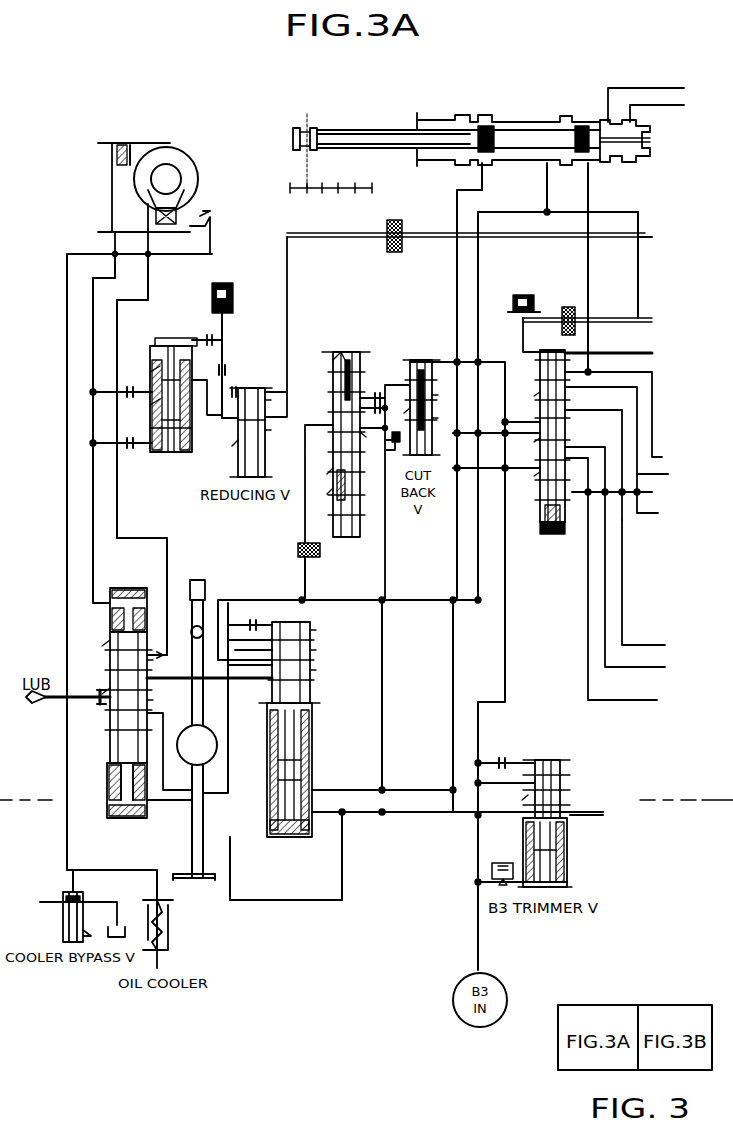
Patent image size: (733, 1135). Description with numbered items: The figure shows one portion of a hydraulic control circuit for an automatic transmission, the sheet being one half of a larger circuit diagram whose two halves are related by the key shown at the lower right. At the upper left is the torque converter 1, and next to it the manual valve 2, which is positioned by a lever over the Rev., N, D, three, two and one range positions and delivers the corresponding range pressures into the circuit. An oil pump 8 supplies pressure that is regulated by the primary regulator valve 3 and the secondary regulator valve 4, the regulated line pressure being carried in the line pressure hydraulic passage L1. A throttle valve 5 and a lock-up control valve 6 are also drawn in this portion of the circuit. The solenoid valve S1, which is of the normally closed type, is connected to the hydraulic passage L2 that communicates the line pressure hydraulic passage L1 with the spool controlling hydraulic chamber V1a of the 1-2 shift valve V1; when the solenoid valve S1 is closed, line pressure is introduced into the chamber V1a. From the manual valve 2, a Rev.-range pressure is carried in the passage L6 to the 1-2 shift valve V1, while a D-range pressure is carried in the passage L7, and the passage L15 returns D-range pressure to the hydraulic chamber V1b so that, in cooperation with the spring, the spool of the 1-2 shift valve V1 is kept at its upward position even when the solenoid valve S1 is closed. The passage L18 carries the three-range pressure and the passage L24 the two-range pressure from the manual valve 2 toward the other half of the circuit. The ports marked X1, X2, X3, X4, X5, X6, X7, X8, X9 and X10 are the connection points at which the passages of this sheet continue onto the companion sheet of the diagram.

The torque converter 1 is at (195, 169).
The manual valve 2 is at (517, 128).
The primary regulator valve 3 is at (310, 698).
The secondary regulator valve 4 is at (110, 745).
The throttle valve 5 is at (344, 352).
The lock-up control valve 6 is at (180, 338).
The oil pump 8 is at (188, 730).
The passage L18 is at (650, 88).
The passage L24 is at (657, 108).
The port X1 is at (648, 237).
The line pressure hydraulic passage L1 is at (479, 254).
The passage L6 is at (455, 296).
The passage L7 is at (589, 254).
The hydraulic passage L2 is at (638, 287).
The solenoid valve S1 is at (517, 295).
The port X2 is at (643, 318).
The spool controlling hydraulic chamber V1a is at (553, 351).
The port X3 is at (645, 353).
The 1-2 shift valve V1 is at (568, 431).
The hydraulic chamber V1b is at (535, 522).
The port X4 is at (660, 455).
The port X5 is at (662, 474).
The port X6 is at (655, 513).
The hydraulic passage L15 is at (628, 515).
The port X7 is at (650, 642).
The port X8 is at (647, 666).
The port X9 is at (647, 700).
The port X10 is at (590, 815).